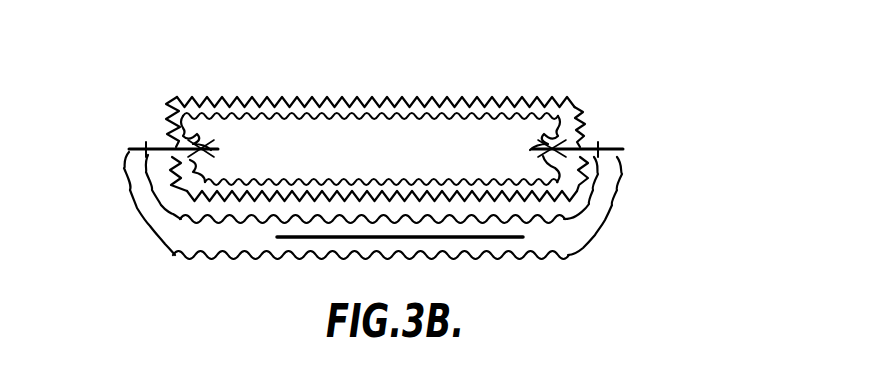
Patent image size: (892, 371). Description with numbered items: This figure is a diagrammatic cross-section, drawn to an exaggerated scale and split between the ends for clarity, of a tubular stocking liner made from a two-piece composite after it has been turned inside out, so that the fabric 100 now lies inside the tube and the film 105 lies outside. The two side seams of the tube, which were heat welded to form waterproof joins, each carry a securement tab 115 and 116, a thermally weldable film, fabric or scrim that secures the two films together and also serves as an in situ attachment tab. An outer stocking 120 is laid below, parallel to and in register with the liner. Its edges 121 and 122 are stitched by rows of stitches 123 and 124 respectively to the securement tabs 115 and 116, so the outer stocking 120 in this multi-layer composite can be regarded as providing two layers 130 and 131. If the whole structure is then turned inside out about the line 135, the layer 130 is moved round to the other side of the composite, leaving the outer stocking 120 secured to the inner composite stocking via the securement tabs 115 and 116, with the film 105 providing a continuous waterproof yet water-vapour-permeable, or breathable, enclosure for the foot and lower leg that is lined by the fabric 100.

The fabric side 100 is at (253, 126).
The film face 105 is at (337, 103).
The securement tab 115 is at (150, 144).
The securement tab 116 is at (590, 145).
The outer stocking 120 is at (604, 229).
The edge of the outer stocking 121 is at (132, 155).
The edge of the outer stocking 122 is at (607, 157).
The row of stitches 123 is at (145, 145).
The row of stitches 124 is at (604, 145).
The layer of the outer stocking 130 is at (477, 255).
The layer of the outer stocking 131 is at (261, 225).
The line 135 is at (340, 238).